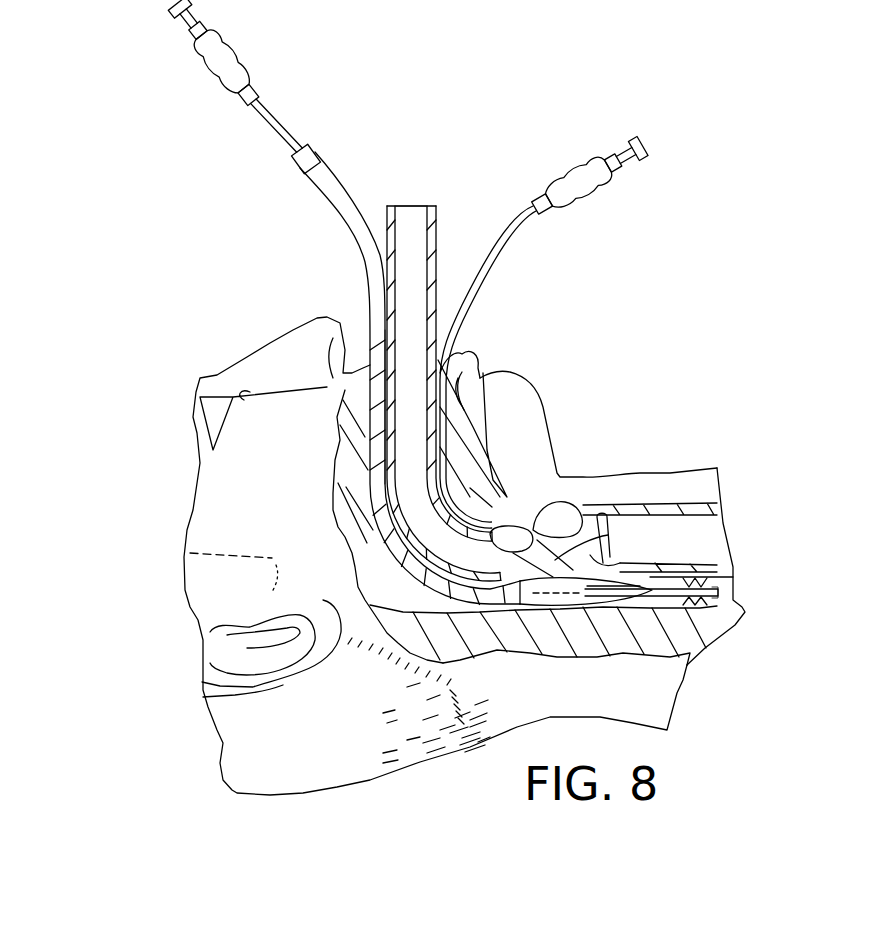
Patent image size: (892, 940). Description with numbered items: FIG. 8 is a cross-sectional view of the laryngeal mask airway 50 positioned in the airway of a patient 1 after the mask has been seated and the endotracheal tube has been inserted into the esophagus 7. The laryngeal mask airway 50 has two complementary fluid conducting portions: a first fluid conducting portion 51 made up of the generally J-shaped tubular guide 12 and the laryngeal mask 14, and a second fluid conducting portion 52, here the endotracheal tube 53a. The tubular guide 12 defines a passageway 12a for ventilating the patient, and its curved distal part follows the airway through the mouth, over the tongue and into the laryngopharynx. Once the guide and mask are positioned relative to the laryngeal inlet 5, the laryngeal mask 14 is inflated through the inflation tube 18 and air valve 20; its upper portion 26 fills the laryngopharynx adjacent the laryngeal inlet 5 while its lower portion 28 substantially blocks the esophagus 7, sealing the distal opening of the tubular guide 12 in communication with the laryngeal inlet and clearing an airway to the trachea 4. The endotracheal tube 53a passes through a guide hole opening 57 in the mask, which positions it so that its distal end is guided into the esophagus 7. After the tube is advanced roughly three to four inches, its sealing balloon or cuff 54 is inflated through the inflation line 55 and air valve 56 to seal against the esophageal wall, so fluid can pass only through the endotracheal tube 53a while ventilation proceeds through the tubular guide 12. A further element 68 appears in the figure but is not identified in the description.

The patient 1 is at (248, 333).
The trachea 4 is at (688, 533).
The laryngeal inlet 5 is at (572, 510).
The esophagus 7 is at (720, 598).
The tubular guide 12 is at (431, 205).
The passageway 12a is at (410, 225).
The laryngeal mask 14 is at (608, 535).
The inflation tube 18 is at (518, 229).
The air valve 20 is at (583, 187).
The upper portion of the laryngeal mask 26 is at (507, 532).
The lower portion of the laryngeal mask 28 is at (520, 607).
The laryngeal mask airway 50 is at (490, 165).
The first fluid conducting portion 51 is at (384, 212).
The second fluid conducting portion 52 is at (352, 274).
The endotracheal tube 53a is at (312, 178).
The sealing balloon 54 is at (718, 603).
The inflation line 55 is at (260, 127).
The air valve 56 is at (237, 55).
The guide hole opening 57 is at (563, 603).
The tube cuff 68 is at (537, 515).